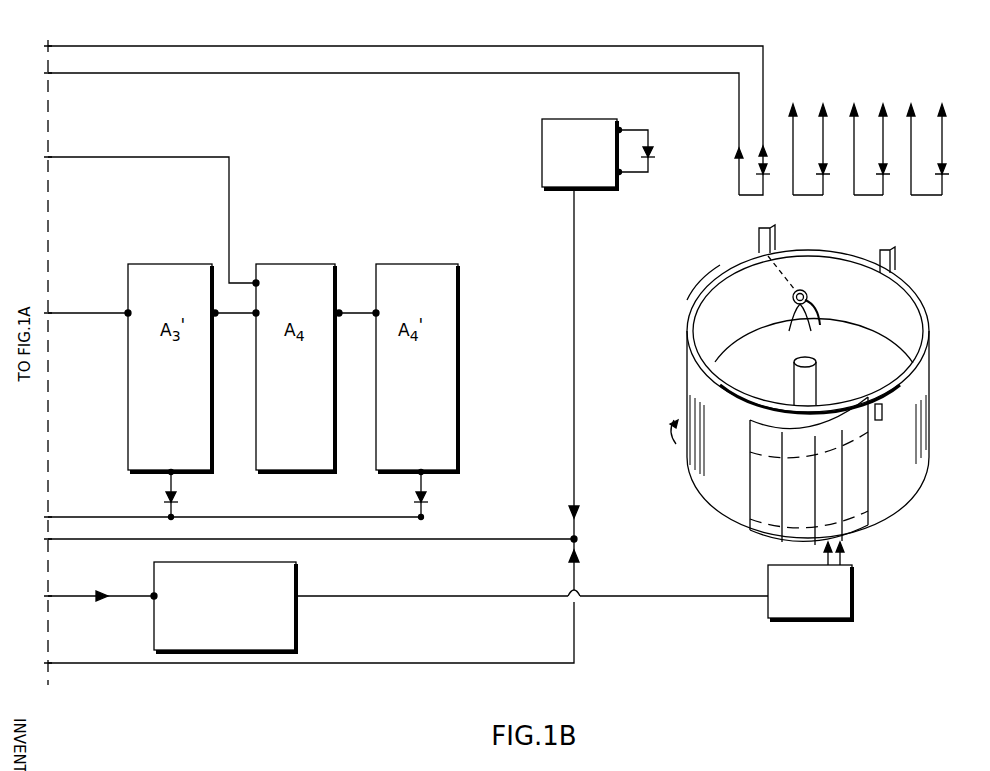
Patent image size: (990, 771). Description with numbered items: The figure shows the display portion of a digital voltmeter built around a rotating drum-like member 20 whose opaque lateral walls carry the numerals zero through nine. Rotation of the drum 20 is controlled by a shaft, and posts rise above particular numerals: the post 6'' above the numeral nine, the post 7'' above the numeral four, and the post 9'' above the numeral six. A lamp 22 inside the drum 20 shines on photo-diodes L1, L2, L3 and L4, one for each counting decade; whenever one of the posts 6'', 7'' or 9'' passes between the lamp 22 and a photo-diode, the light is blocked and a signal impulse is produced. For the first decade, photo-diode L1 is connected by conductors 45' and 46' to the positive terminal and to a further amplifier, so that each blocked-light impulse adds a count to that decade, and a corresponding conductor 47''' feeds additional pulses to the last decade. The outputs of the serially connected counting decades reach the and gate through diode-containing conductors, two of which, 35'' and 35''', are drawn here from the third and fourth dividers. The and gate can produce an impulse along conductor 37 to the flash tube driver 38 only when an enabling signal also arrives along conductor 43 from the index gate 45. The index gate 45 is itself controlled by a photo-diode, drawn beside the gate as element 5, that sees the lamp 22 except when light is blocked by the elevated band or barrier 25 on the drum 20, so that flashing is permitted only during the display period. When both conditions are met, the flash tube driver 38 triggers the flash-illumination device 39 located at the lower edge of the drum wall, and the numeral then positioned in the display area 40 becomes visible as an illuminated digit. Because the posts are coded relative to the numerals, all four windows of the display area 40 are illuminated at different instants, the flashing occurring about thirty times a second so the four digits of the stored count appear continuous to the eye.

The conductor 46' is at (409, 107).
The conductor 45' is at (395, 134).
The conductor 47''' is at (153, 221).
The index gate 45 is at (548, 154).
The switch diode 5 is at (655, 152).
The photo-diode L1 is at (766, 175).
The photo-diode L2 is at (826, 175).
The photo-diode L3 is at (886, 175).
The photo-diode L4 is at (945, 175).
The diode-containing conductor 35'' is at (202, 495).
The diode-containing conductor 35''' is at (270, 495).
The conductor 43 is at (576, 380).
The conductor 37 is at (64, 598).
The flash tube driver 38 is at (298, 624).
The flash-illumination device 39 is at (852, 608).
The drum-like member 20 is at (930, 430).
The elevated band or barrier 25 is at (688, 326).
The post 6'' is at (758, 257).
The post 7'' is at (907, 271).
The lamp 22 is at (815, 319).
The post 9'' is at (879, 393).
The display area 40 is at (862, 522).